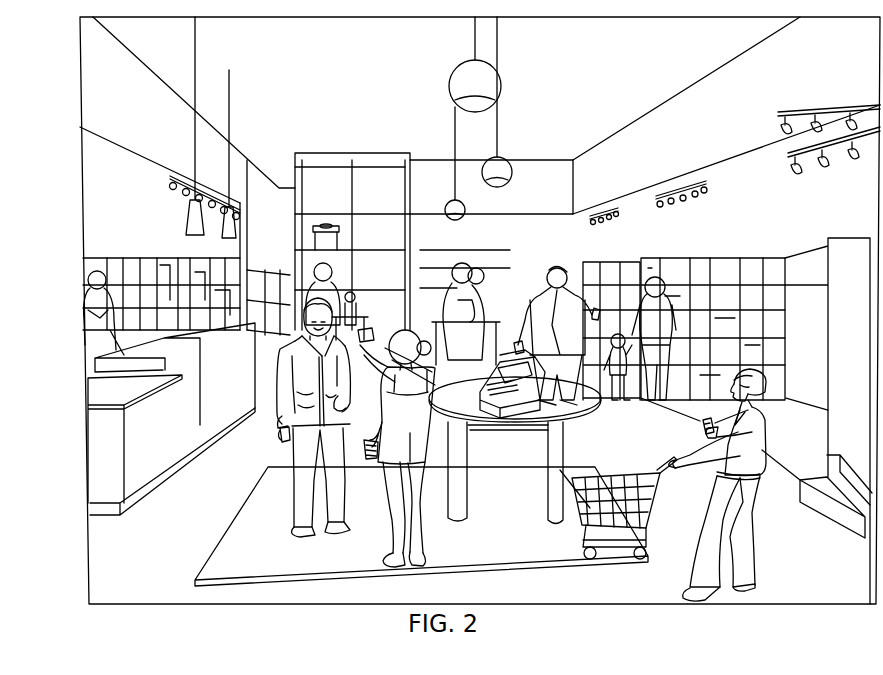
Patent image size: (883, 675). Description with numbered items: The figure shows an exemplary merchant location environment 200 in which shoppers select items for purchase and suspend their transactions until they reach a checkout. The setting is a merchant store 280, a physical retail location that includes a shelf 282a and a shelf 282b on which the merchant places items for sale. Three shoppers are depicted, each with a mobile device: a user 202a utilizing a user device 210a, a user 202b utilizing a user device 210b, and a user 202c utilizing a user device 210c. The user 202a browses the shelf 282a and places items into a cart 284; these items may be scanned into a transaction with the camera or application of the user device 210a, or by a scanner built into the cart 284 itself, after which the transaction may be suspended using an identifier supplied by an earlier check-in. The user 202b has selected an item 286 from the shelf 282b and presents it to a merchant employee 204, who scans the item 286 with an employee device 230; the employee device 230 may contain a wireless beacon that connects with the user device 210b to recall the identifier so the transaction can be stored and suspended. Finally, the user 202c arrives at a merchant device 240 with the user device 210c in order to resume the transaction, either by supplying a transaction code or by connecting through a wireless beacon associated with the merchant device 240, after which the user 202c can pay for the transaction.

The environment 200 is at (58, 66).
The merchant store 280 is at (440, 44).
The shelf 282a is at (733, 256).
The shelf 282b is at (140, 256).
The item 286 is at (366, 333).
The employee device 230 is at (370, 438).
The user 202a is at (763, 447).
The user 202b is at (300, 478).
The user 202c is at (597, 310).
The user device 210a is at (700, 427).
The user device 210b is at (280, 434).
The user device 210c is at (554, 266).
The merchant employee 204 is at (398, 543).
The merchant device 240 is at (524, 404).
The cart 284 is at (656, 490).